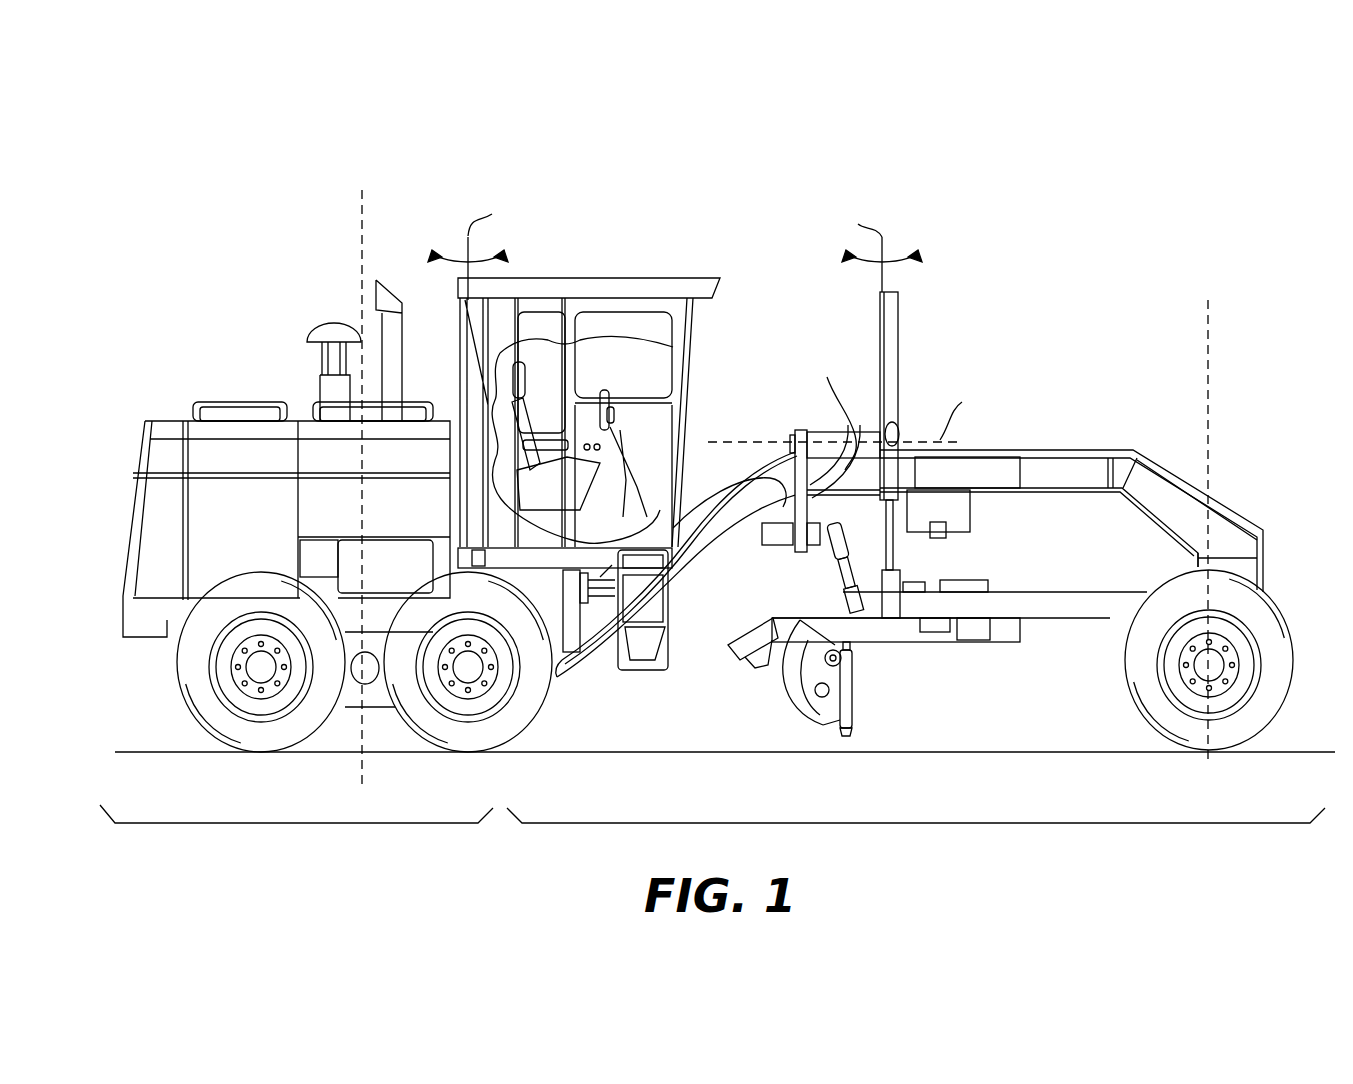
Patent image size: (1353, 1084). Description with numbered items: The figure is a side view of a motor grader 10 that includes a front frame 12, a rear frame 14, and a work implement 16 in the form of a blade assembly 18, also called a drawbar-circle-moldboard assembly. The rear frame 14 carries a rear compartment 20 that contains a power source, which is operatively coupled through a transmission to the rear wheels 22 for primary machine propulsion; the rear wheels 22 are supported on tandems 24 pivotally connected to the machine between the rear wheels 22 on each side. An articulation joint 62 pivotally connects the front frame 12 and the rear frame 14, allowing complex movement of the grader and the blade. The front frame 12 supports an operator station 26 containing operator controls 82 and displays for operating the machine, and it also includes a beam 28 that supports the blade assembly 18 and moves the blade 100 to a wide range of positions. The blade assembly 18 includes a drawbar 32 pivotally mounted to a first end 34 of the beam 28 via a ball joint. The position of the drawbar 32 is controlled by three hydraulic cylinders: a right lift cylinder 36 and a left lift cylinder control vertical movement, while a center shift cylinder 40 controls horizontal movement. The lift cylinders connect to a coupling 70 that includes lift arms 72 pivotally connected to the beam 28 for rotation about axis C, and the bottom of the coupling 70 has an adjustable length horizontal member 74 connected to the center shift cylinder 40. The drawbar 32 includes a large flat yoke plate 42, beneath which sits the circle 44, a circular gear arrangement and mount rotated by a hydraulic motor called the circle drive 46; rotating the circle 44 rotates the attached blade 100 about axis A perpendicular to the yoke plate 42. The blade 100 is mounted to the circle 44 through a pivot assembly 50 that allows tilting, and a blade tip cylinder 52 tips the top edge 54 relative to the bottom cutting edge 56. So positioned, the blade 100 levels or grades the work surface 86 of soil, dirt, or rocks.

The motor grader 10 is at (1038, 144).
The front frame 12 is at (912, 823).
The rear frame 14 is at (282, 823).
The work implement 16 is at (928, 672).
The blade assembly 18 is at (960, 672).
The rear compartment 20 is at (195, 497).
The rear wheels 22 is at (188, 668).
The tandems 24 is at (358, 695).
The operator station 26 is at (695, 335).
The beam 28 is at (1100, 465).
The drawbar 32 is at (1105, 622).
The first end 34 is at (1158, 571).
The right lift cylinder 36 is at (905, 355).
The center shift cylinder 40 is at (832, 556).
The yoke plate 42 is at (755, 617).
The circle 44 is at (950, 642).
The circle drive 46 is at (975, 578).
The pivot assembly 50 is at (776, 703).
The blade tip cylinder 52 is at (753, 670).
The top edge 54 is at (848, 655).
The bottom cutting edge 56 is at (850, 730).
The articulation joint 62 is at (437, 393).
The coupling 70 is at (781, 436).
The lift arms 72 is at (855, 437).
The adjustable length horizontal member 74 is at (770, 560).
The operator controls 82 is at (605, 392).
The work surface 86 is at (1300, 752).
The blade 100 is at (852, 718).